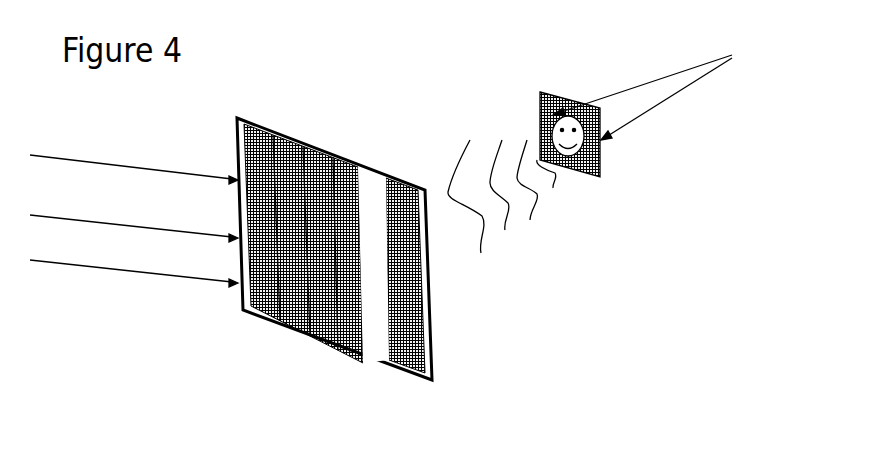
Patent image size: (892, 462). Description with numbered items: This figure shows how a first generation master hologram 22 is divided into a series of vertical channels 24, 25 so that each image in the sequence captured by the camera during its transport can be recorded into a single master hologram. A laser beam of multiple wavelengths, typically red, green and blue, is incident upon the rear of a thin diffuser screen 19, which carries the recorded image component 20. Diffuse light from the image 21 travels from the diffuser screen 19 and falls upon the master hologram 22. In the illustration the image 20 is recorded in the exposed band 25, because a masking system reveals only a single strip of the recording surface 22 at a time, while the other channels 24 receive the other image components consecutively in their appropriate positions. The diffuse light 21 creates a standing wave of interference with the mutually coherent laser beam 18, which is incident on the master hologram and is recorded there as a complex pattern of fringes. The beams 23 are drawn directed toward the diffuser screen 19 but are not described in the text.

The mutually coherent laser beam 18 is at (156, 222).
The thin diffuser screen 19 is at (553, 91).
The recorded image component 20 is at (607, 153).
The diffuse light from the image 21 is at (517, 235).
The first generation master hologram 22 is at (435, 362).
The reflected beams 23 is at (717, 78).
The vertical channel 24 is at (320, 342).
The exposed band 25 is at (378, 343).